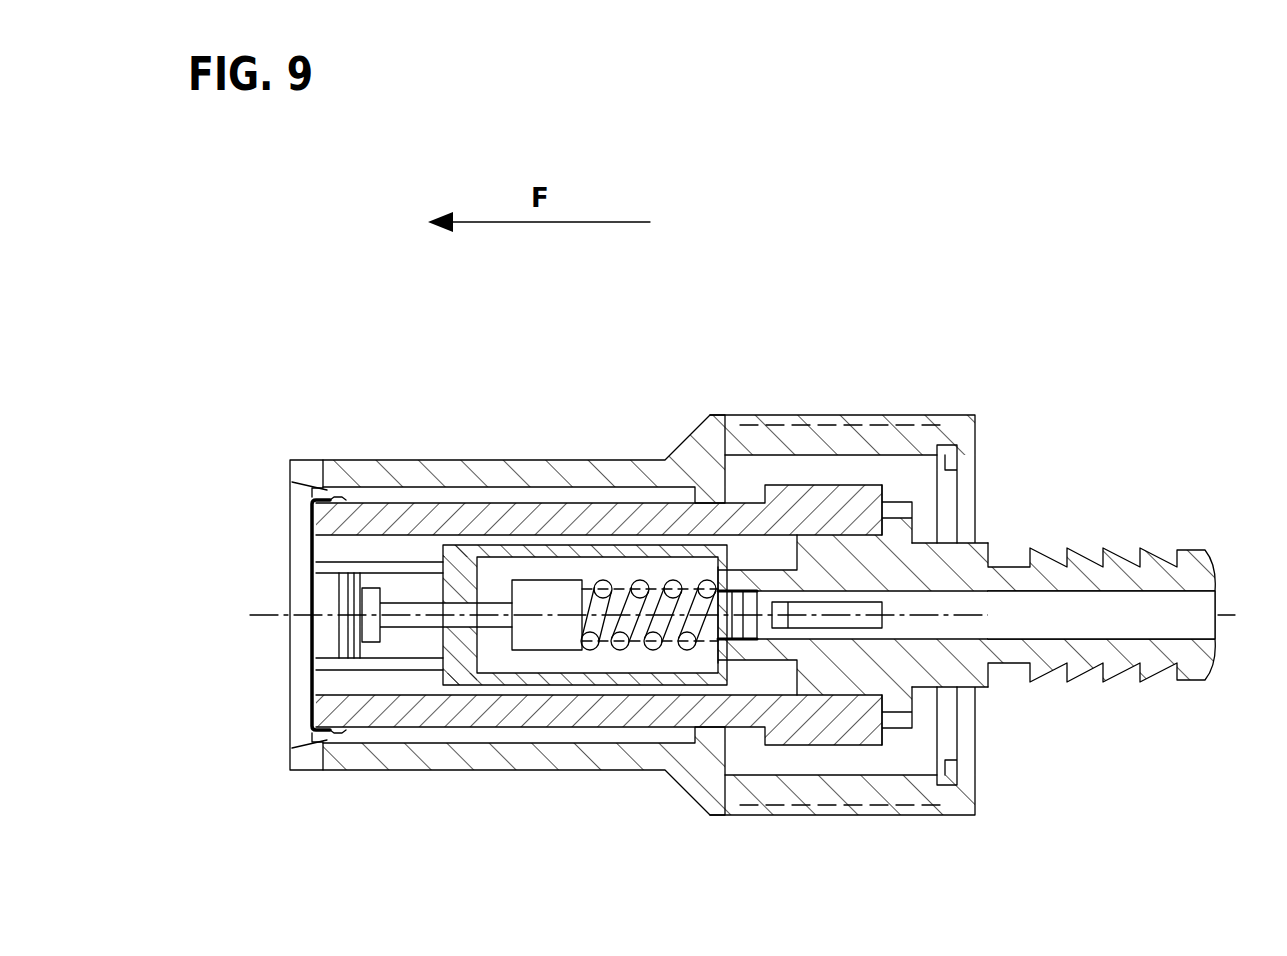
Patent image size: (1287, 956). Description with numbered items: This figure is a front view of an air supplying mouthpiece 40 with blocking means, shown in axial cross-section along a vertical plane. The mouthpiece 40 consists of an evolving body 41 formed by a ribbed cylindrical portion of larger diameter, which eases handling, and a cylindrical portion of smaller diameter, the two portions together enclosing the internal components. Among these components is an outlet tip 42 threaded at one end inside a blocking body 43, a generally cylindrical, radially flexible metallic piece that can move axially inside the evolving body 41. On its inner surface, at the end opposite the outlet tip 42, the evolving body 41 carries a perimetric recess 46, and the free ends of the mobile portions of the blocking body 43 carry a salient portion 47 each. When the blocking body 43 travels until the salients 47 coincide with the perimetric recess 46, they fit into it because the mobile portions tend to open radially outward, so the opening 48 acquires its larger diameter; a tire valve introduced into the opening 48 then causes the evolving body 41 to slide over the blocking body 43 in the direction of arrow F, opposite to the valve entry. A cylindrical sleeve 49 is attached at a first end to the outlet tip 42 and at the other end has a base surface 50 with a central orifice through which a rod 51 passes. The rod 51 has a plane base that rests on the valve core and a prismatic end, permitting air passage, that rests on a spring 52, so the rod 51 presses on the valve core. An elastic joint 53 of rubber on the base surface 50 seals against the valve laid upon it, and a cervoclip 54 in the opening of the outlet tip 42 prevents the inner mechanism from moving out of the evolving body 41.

The mouthpiece 40 is at (690, 792).
The evolving body 41 is at (484, 460).
The outlet tip 42 is at (1078, 570).
The blocking body 43 is at (661, 517).
The perimetric recess 46 is at (300, 745).
The salient portion 47 is at (327, 460).
The opening 48 is at (337, 547).
The cylindrical sleeve 49 is at (670, 678).
The base surface 50 is at (478, 655).
The rod 51 is at (410, 618).
The spring 52 is at (618, 651).
The elastic joint 53 is at (463, 668).
The cervoclip 54 is at (975, 445).